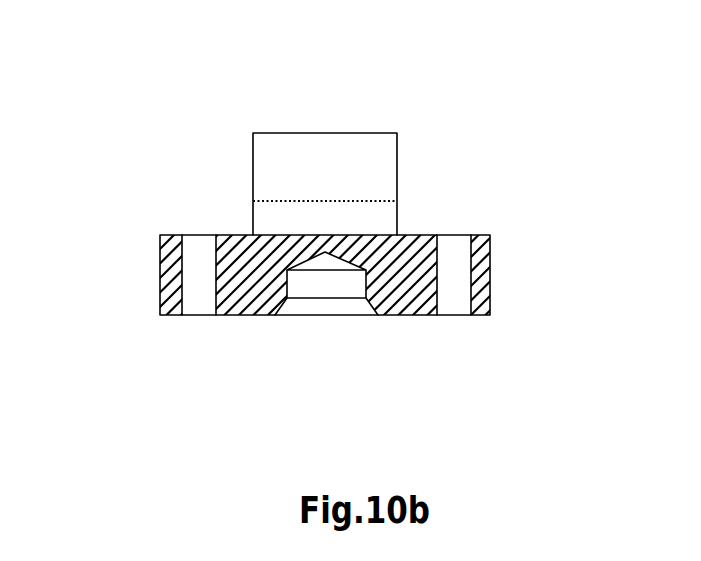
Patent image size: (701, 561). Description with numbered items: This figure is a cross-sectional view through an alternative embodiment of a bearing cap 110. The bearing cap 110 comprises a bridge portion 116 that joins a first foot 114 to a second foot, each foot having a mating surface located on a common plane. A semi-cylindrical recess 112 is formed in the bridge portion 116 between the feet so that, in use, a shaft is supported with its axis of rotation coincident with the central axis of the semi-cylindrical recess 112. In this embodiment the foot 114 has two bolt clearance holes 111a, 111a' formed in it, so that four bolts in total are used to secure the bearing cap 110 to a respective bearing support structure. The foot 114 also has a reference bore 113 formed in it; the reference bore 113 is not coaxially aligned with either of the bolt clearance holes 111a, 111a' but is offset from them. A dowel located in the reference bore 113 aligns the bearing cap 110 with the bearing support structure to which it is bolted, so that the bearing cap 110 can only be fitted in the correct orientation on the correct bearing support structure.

The bearing cap 110 is at (320, 238).
The bolt clearance hole 111a is at (169, 323).
The bolt clearance hole 111a' is at (502, 323).
The semi-cylindrical recess 112 is at (285, 202).
The reference bore 113 is at (365, 270).
The first foot 114 is at (161, 280).
The bridge portion 116 is at (290, 133).